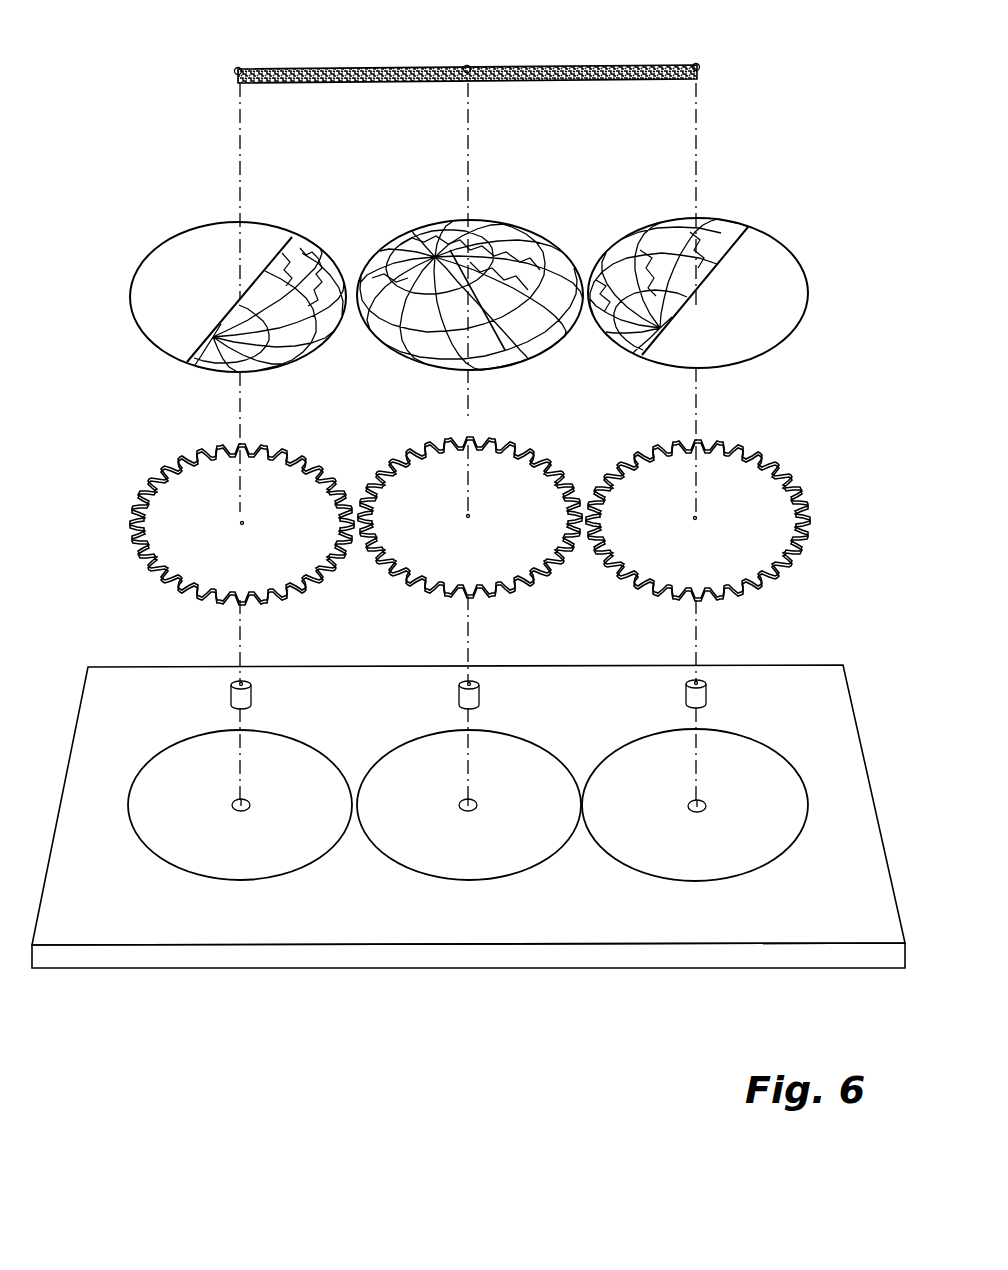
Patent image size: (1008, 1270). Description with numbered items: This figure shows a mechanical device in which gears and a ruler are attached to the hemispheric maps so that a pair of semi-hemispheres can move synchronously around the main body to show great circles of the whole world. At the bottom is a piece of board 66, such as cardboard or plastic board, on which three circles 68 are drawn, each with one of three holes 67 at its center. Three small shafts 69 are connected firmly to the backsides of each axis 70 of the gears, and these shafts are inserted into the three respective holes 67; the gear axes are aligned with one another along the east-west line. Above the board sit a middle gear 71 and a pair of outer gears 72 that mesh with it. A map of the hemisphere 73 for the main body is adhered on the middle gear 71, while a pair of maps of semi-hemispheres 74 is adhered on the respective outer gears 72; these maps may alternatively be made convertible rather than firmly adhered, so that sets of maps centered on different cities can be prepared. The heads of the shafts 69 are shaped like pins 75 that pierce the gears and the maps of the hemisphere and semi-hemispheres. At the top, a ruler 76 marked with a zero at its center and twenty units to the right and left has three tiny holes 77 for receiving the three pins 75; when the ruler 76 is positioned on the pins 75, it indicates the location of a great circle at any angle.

The board 66 is at (130, 908).
The holes 67 is at (252, 808).
The circles 68 is at (253, 852).
The small shafts 69 is at (232, 700).
The axis 70 is at (242, 523).
The middle gear 71 is at (440, 513).
The outer gears 72 is at (212, 518).
The map of hemisphere 73 is at (500, 358).
The maps of semi-hemispheres 74 is at (280, 360).
The pins 75 is at (460, 684).
The ruler 76 is at (596, 82).
The tiny holes 77 is at (467, 68).